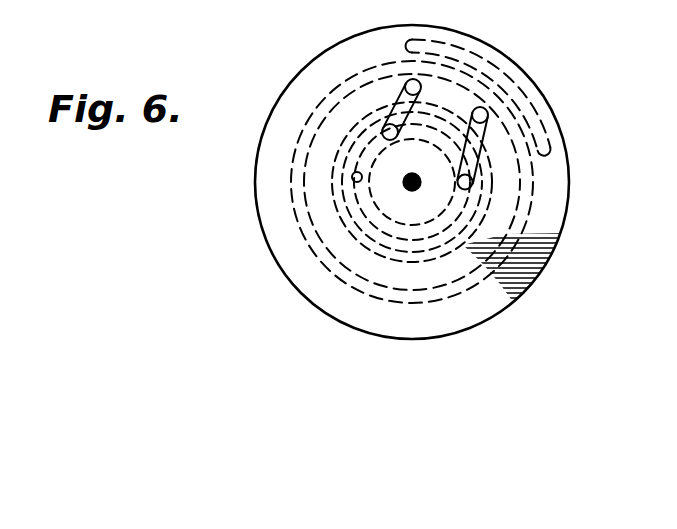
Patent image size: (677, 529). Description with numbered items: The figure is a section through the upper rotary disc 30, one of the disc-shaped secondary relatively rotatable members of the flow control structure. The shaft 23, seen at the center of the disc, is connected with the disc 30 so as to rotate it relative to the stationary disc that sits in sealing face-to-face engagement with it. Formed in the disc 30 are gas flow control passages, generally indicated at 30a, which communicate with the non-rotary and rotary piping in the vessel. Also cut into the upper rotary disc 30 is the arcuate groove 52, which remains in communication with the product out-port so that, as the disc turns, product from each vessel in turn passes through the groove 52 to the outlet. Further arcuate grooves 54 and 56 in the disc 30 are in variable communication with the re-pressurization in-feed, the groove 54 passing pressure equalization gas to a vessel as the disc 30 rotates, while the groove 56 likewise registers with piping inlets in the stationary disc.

The upper rotary disc 30 is at (258, 238).
The gas flow control passage 30a is at (490, 205).
The arcuate groove 52 is at (490, 66).
The arcuate groove 54 is at (351, 178).
The shaft 23 is at (405, 191).
The arcuate groove 56 is at (438, 238).